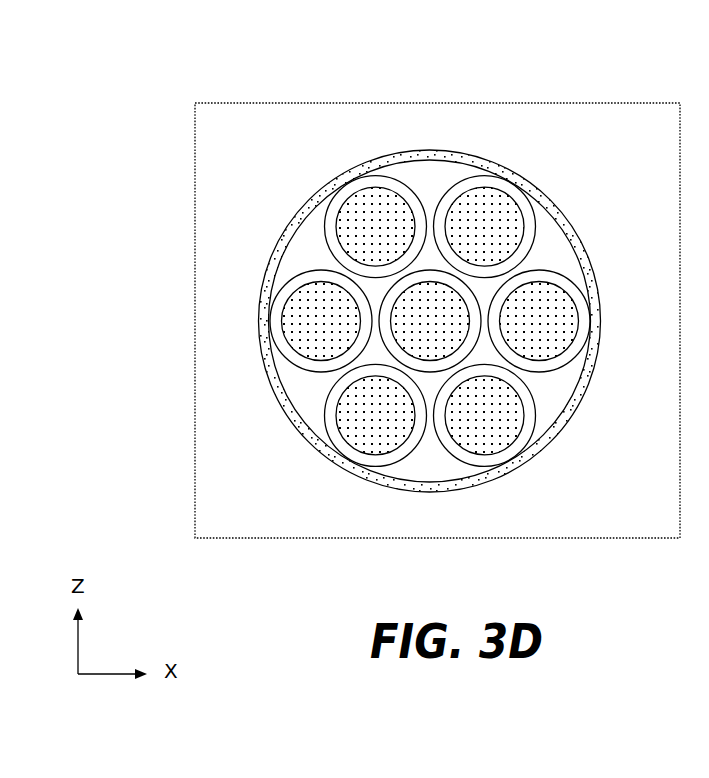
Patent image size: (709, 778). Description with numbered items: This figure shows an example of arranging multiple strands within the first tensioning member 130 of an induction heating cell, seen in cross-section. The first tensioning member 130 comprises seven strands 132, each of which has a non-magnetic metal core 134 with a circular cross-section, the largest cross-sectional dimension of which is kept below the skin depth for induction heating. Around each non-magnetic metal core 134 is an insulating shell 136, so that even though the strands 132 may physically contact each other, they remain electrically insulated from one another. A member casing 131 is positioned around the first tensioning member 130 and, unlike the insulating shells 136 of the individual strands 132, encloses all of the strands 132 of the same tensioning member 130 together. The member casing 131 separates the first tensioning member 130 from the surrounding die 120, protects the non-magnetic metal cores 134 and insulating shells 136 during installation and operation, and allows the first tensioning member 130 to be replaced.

The die 120 is at (237, 123).
The first tensioning member 130 is at (338, 140).
The member casing 131 is at (300, 207).
The strand 132 is at (293, 282).
The non-magnetic metal core 134 is at (302, 341).
The insulating shell 136 is at (280, 330).